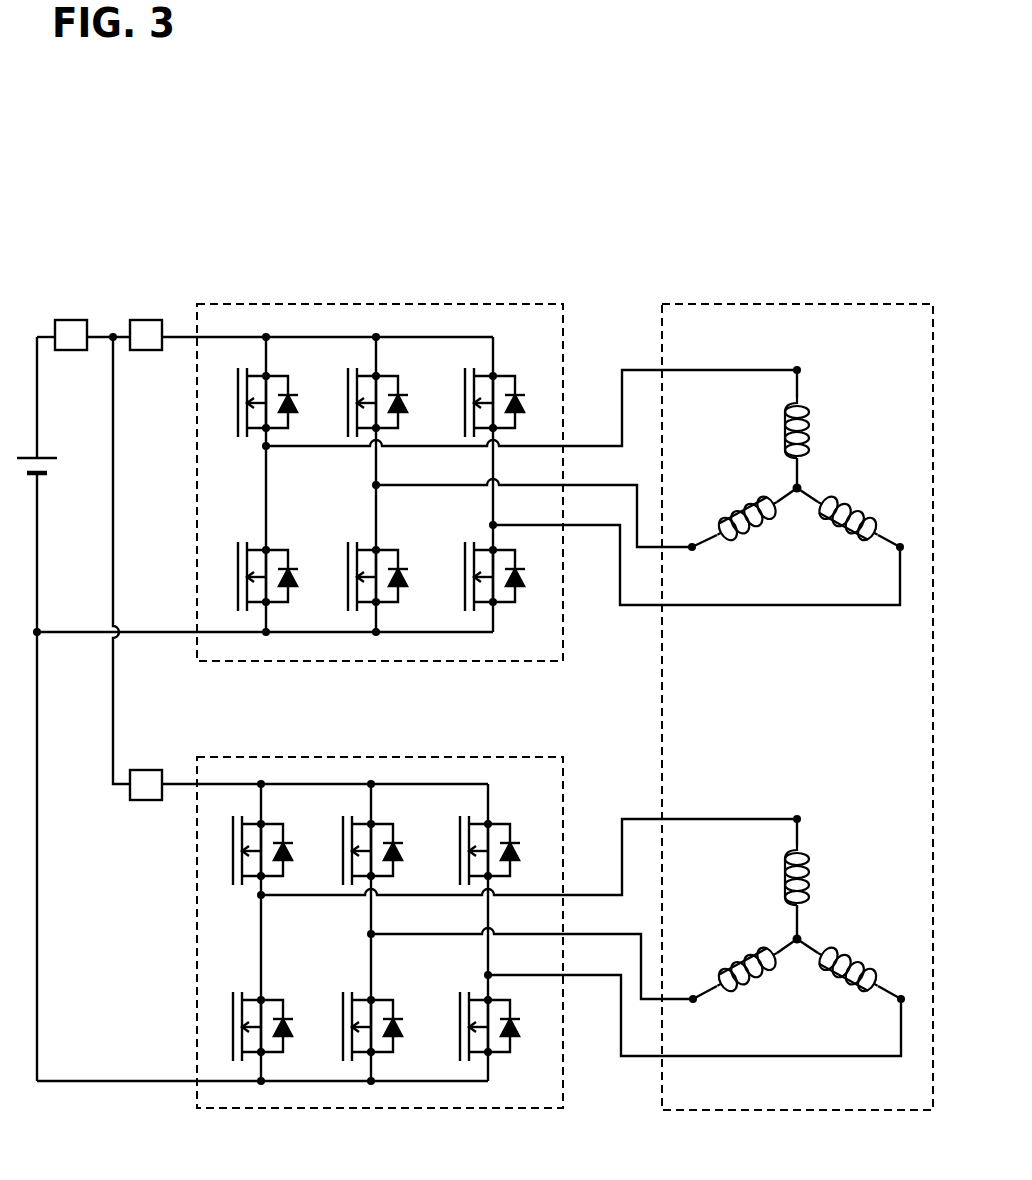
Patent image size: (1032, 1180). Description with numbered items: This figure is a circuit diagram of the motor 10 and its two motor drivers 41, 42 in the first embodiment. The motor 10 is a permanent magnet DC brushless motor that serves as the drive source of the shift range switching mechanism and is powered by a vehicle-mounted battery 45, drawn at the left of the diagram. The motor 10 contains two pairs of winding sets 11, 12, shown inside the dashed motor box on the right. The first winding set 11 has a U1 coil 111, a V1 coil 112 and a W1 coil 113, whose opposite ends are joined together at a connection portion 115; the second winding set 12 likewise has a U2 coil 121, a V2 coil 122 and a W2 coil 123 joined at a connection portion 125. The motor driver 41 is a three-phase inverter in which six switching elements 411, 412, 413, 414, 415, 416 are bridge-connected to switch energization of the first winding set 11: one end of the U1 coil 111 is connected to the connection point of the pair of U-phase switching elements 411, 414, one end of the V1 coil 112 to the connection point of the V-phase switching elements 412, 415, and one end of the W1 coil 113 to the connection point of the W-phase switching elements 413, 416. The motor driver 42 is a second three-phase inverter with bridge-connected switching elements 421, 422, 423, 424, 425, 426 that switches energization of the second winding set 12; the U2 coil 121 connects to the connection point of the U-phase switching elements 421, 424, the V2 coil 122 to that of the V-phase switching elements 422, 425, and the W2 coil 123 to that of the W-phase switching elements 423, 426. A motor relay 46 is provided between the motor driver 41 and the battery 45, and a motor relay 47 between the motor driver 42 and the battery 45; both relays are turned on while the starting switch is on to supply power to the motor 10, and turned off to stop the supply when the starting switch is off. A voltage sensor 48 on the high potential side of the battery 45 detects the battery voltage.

The motor 10 is at (705, 303).
The first winding set 11 is at (818, 388).
The U1 coil 111 is at (810, 424).
The V1 coil 112 is at (745, 500).
The W1 coil 113 is at (848, 497).
The connection portion 115 is at (797, 495).
The second winding set 12 is at (818, 848).
The U2 coil 121 is at (810, 873).
The V2 coil 122 is at (745, 951).
The W2 coil 123 is at (848, 948).
The connection portion 125 is at (797, 946).
The motor driver 41 is at (226, 303).
The U-phase switching element 411 is at (266, 376).
The V-phase switching element 412 is at (376, 376).
The W-phase switching element 413 is at (493, 376).
The U-phase switching element 414 is at (266, 550).
The V-phase switching element 415 is at (376, 550).
The W-phase switching element 416 is at (515, 595).
The motor driver 42 is at (226, 756).
The U-phase switching element 421 is at (261, 824).
The V-phase switching element 422 is at (371, 824).
The W-phase switching element 423 is at (488, 824).
The U-phase switching element 424 is at (261, 1000).
The V-phase switching element 425 is at (371, 1000).
The W-phase switching element 426 is at (510, 1045).
The battery 45 is at (50, 457).
The motor relay 46 is at (142, 320).
The motor relay 47 is at (143, 770).
The voltage sensor 48 is at (64, 320).